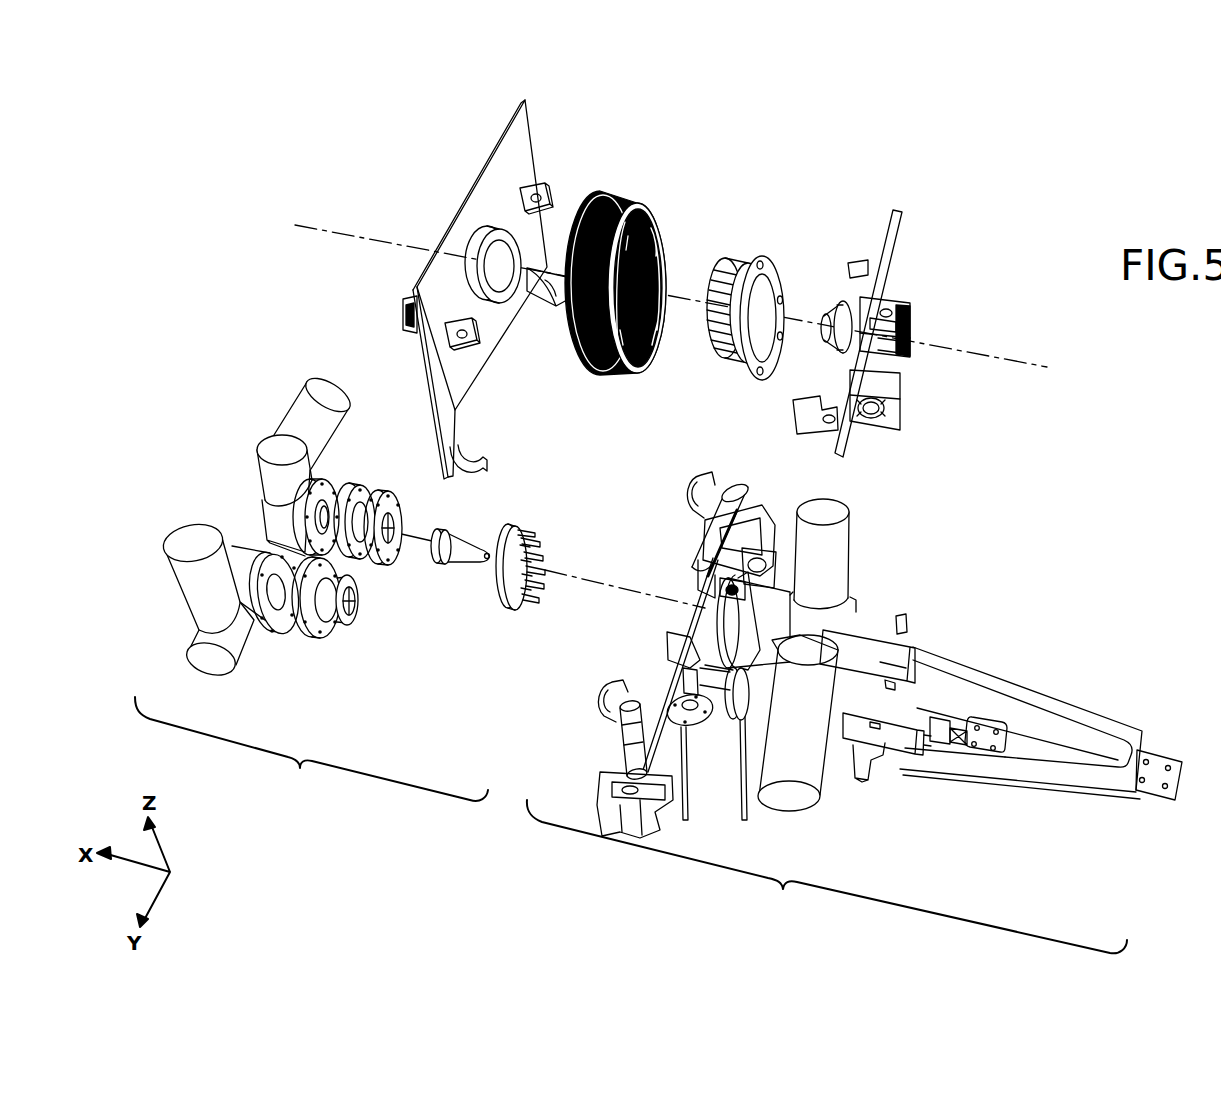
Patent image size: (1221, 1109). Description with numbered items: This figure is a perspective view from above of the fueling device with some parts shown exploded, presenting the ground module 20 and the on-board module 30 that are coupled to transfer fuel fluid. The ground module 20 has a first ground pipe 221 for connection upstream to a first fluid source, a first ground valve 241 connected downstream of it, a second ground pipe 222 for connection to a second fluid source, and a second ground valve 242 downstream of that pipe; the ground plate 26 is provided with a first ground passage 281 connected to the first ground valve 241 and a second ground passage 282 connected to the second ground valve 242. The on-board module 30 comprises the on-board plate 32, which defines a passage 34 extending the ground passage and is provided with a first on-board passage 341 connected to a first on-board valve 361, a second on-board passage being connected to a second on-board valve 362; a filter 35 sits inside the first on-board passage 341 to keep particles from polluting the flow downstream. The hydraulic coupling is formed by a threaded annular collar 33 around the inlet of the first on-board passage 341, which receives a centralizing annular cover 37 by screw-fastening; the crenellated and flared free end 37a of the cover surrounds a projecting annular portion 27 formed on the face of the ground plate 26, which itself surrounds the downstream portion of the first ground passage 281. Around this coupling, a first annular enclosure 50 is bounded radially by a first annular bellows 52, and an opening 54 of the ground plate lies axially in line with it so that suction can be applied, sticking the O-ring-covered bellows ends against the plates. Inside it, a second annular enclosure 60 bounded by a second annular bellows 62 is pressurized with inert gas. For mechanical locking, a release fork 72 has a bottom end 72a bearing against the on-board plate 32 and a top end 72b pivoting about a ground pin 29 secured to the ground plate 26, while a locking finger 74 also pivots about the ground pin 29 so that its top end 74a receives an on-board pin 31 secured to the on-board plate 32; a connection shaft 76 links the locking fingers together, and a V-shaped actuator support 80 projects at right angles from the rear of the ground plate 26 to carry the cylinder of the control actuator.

The ground module 20 is at (827, 876).
The first ground pipe 221 is at (907, 645).
The second ground pipe 222 is at (905, 765).
The first ground valve 241 is at (838, 600).
The second ground valve 242 is at (820, 780).
The ground plate 26 is at (897, 331).
The projecting annular portion 27 is at (840, 302).
The first ground passage 281 is at (908, 335).
The second ground passage 282 is at (905, 406).
The ground pin 29 is at (712, 566).
The on-board module 30 is at (311, 749).
The on-board pin 31 is at (699, 527).
The on-board plate 32 is at (545, 156).
The threaded annular collar 33 is at (496, 230).
The passage 34 is at (403, 316).
The first on-board passage 341 is at (514, 289).
The filter 35 is at (465, 540).
The first on-board valve 361 is at (262, 496).
The second on-board valve 362 is at (236, 537).
The centralizing annular cover 37 is at (551, 544).
The free end 37a is at (546, 550).
The first annular enclosure 50 is at (639, 257).
The first annular bellows 52 is at (634, 194).
The opening 54 is at (908, 350).
The second annular enclosure 60 is at (749, 310).
The second annular bellows 62 is at (745, 244).
The release fork 72 is at (754, 542).
The bottom end 72a is at (629, 826).
The top end 72b is at (620, 736).
The locking finger 74 is at (600, 708).
The top end 74a is at (686, 501).
The connection shaft 76 is at (690, 633).
The V-shaped actuator support 80 is at (1158, 796).